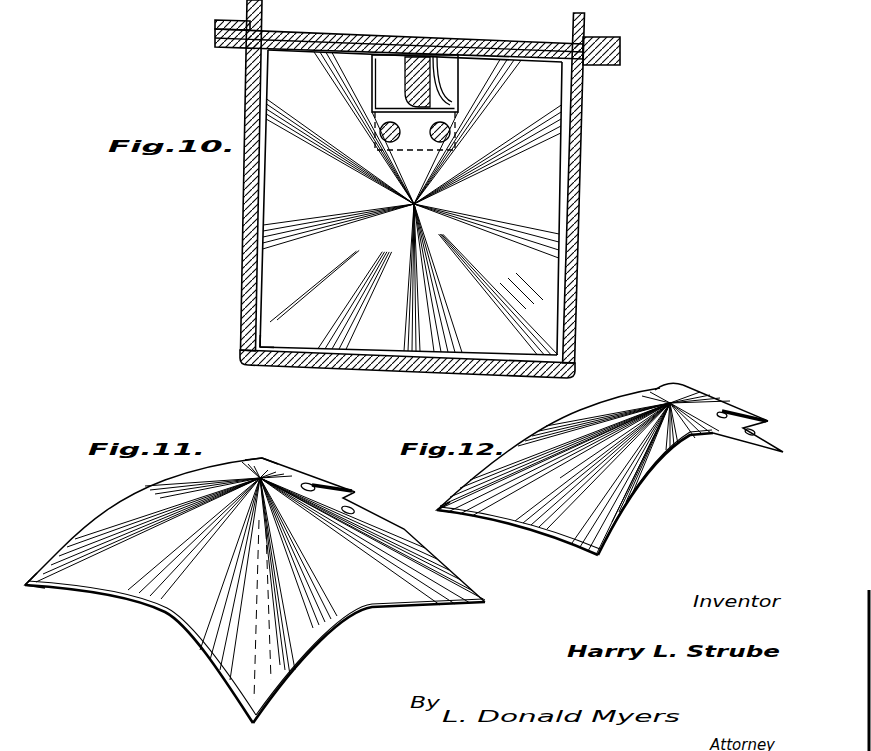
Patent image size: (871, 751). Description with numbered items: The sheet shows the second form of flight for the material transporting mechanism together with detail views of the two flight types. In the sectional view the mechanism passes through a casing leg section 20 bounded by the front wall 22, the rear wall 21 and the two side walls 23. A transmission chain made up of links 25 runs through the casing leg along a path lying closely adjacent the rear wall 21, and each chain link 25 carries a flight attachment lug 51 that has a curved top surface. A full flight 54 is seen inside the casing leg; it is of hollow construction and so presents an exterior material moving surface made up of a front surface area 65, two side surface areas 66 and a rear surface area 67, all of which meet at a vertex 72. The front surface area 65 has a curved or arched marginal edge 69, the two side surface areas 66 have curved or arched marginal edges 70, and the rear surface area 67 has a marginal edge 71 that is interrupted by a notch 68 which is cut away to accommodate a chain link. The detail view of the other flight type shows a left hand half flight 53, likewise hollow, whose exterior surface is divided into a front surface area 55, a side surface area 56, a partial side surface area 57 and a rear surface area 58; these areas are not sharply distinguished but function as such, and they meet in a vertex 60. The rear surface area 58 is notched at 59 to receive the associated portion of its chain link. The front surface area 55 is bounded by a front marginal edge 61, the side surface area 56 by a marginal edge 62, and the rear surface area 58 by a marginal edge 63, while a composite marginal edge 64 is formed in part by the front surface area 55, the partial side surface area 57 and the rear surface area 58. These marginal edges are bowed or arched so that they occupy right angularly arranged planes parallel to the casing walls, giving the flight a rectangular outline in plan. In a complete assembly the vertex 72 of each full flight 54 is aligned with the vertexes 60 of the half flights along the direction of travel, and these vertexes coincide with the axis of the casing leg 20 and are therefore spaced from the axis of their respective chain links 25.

In FIG. 10, the casing leg section 20 is at (413, 197).
In FIG. 10, the rear wall 21 is at (352, 30).
In FIG. 10, the front wall 22 is at (367, 367).
In FIG. 10, the side walls 23 is at (243, 220).
In FIG. 10, the chain links 25 is at (415, 54).
In FIG. 10, the flight attachment lug 51 is at (403, 153).
In FIG. 12, the left hand half flight 53 is at (437, 510).
In FIG. 10, the full flight 54 is at (250, 352).
In FIG. 11, the full flight 54 is at (27, 588).
In FIG. 12, the front surface area 55 is at (570, 494).
In FIG. 12, the side surface area 56 is at (598, 405).
In FIG. 12, the partial side surface area 57 is at (683, 430).
In FIG. 12, the rear surface area 58 is at (703, 400).
In FIG. 12, the notch 59 is at (767, 433).
In FIG. 12, the vertex 60 is at (660, 386).
In FIG. 12, the front marginal edge 61 is at (542, 530).
In FIG. 12, the marginal edge 62 is at (545, 418).
In FIG. 12, the marginal edge 63 is at (680, 383).
In FIG. 12, the composite marginal edge 64 is at (647, 473).
In FIG. 10, the front surface area 65 is at (399, 299).
In FIG. 11, the front surface area 65 is at (204, 573).
In FIG. 10, the side surface areas 66 is at (319, 204).
In FIG. 11, the side surface areas 66 is at (172, 490).
In FIG. 10, the rear surface area 67 is at (409, 128).
In FIG. 11, the rear surface area 67 is at (407, 548).
In FIG. 10, the notch 68 is at (461, 62).
In FIG. 11, the notch 68 is at (352, 508).
In FIG. 10, the marginal edge 69 is at (443, 360).
In FIG. 11, the marginal edge 69 is at (172, 620).
In FIG. 10, the marginal edges 70 is at (247, 185).
In FIG. 11, the marginal edges 70 is at (147, 483).
In FIG. 10, the marginal edge 71 is at (505, 58).
In FIG. 11, the marginal edge 71 is at (322, 482).
In FIG. 10, the vertex 72 is at (401, 215).
In FIG. 11, the vertex 72 is at (262, 457).